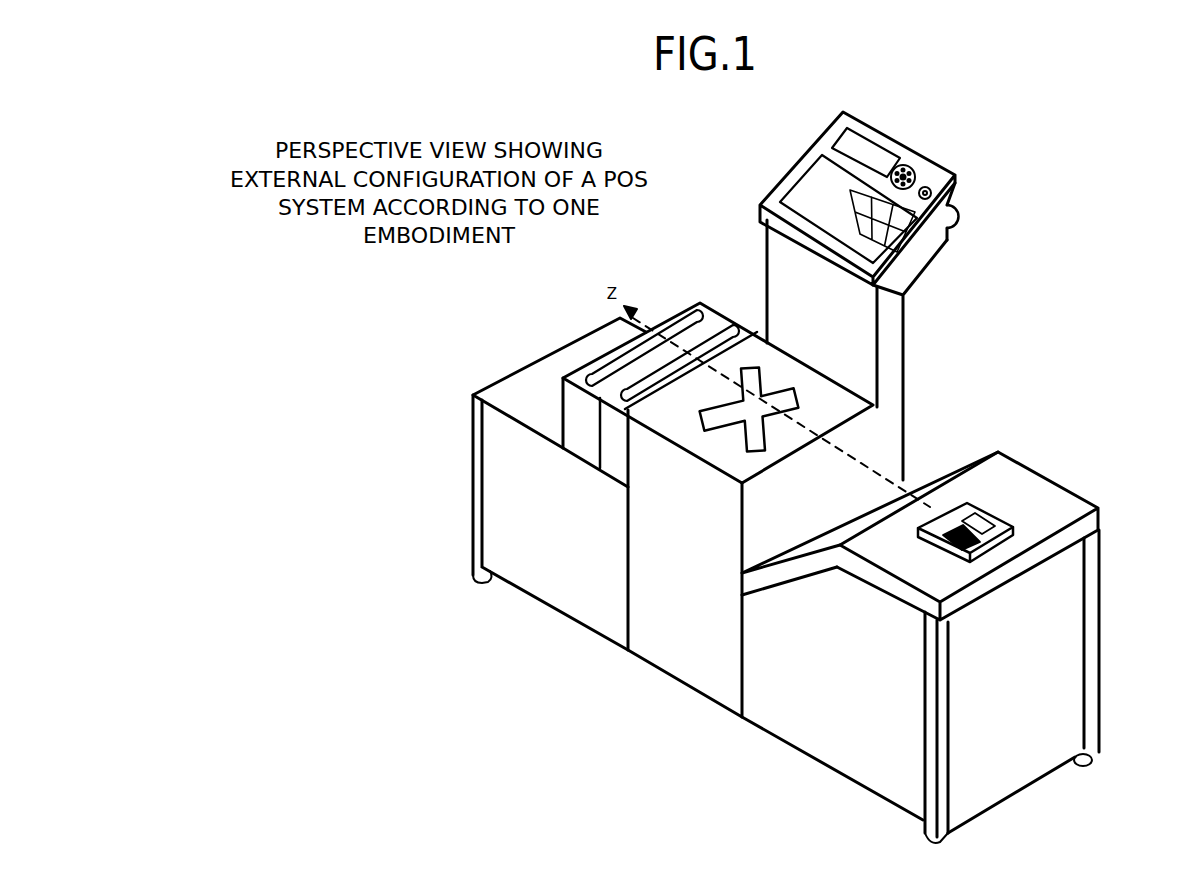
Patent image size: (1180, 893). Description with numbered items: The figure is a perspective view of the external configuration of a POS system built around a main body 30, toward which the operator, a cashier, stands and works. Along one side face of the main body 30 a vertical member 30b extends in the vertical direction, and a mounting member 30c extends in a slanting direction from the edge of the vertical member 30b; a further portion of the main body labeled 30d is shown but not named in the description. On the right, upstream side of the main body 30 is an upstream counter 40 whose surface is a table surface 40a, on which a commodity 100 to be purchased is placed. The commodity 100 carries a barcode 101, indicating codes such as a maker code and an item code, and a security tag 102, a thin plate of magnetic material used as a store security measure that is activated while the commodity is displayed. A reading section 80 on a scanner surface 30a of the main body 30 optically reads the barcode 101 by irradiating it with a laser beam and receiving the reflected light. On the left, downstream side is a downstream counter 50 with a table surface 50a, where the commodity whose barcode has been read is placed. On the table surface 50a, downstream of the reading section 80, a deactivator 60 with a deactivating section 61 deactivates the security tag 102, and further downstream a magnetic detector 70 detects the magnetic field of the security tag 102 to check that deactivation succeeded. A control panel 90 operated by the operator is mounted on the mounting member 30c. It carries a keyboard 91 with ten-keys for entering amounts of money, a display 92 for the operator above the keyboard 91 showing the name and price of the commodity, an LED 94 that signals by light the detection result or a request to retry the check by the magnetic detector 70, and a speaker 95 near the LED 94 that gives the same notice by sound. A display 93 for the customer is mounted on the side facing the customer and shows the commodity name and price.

The main body 30 is at (798, 450).
The scanner surface 30a is at (717, 460).
The vertical member 30b is at (895, 333).
The mounting member 30c is at (927, 253).
The upper side portion of pedestal 30d is at (950, 224).
The upstream counter 40 is at (944, 646).
The table surface 40a is at (1060, 497).
The downstream counter 50 is at (538, 484).
The table surface 50a is at (551, 366).
The deactivator 60 is at (674, 366).
The deactivating section 61 is at (703, 313).
The magnetic detector 70 is at (683, 330).
The reading section 80 is at (800, 398).
The control panel 90 is at (875, 186).
The keyboard 91 is at (810, 183).
The display 92 is at (863, 143).
The display 93 is at (960, 213).
The LED 94 is at (931, 189).
The speaker 95 is at (903, 164).
The commodity 100 is at (988, 510).
The barcode 101 is at (953, 547).
The security tag 102 is at (992, 520).